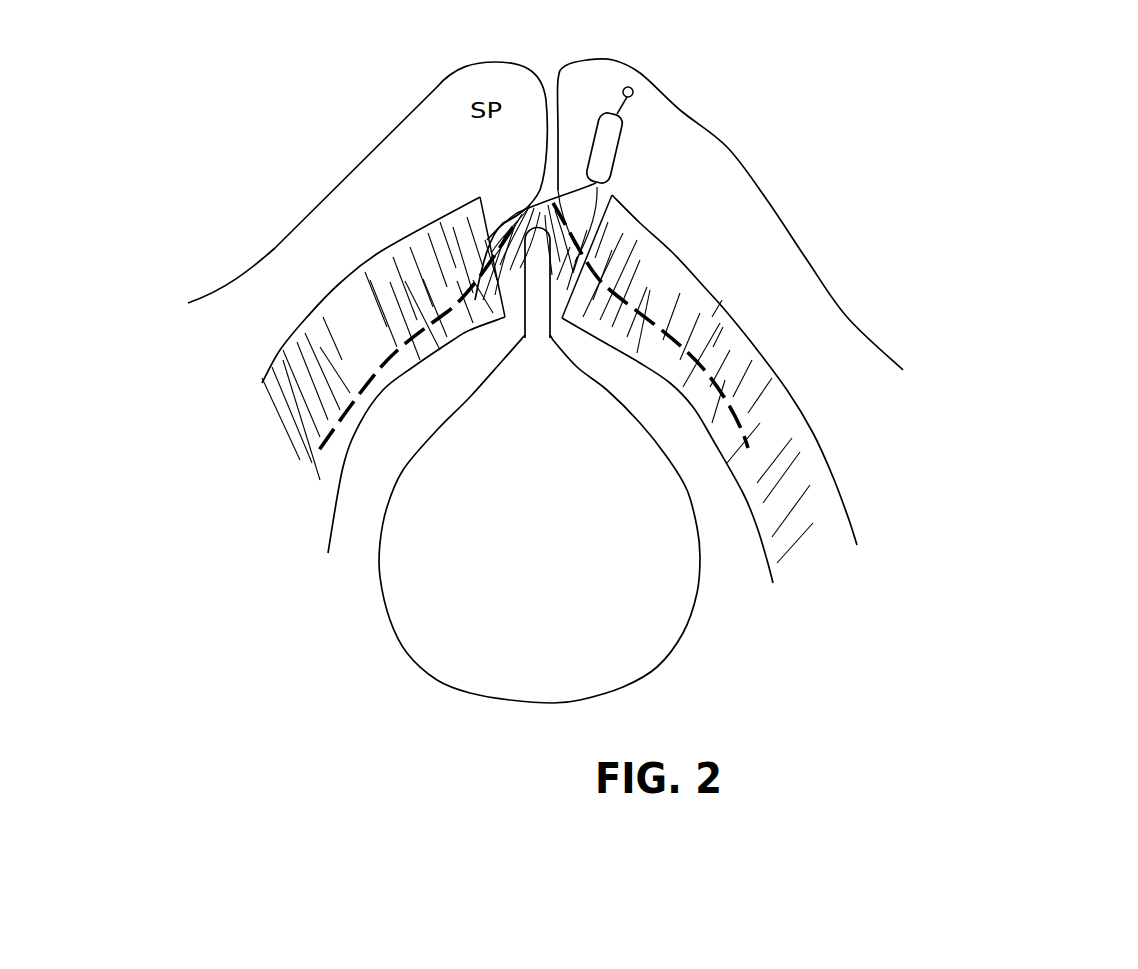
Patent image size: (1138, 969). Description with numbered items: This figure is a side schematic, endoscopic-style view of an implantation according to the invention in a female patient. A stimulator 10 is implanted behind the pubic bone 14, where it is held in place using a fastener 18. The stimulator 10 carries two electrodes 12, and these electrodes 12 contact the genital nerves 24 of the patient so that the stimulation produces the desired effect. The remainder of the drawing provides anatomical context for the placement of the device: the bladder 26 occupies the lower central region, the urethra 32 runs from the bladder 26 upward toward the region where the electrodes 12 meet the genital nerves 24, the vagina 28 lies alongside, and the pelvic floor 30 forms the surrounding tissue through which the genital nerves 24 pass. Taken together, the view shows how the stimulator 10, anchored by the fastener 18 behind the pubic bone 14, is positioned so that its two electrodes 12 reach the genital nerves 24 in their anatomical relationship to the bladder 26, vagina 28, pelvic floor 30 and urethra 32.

The stimulator 10 is at (610, 145).
The electrodes 12 is at (530, 210).
The pubic bone 14 is at (594, 90).
The fastener 18 is at (637, 89).
The genital nerves 24 is at (428, 317).
The bladder 26 is at (554, 509).
The vagina 28 is at (415, 432).
The pelvic floor 30 is at (316, 356).
The urethra 32 is at (537, 272).